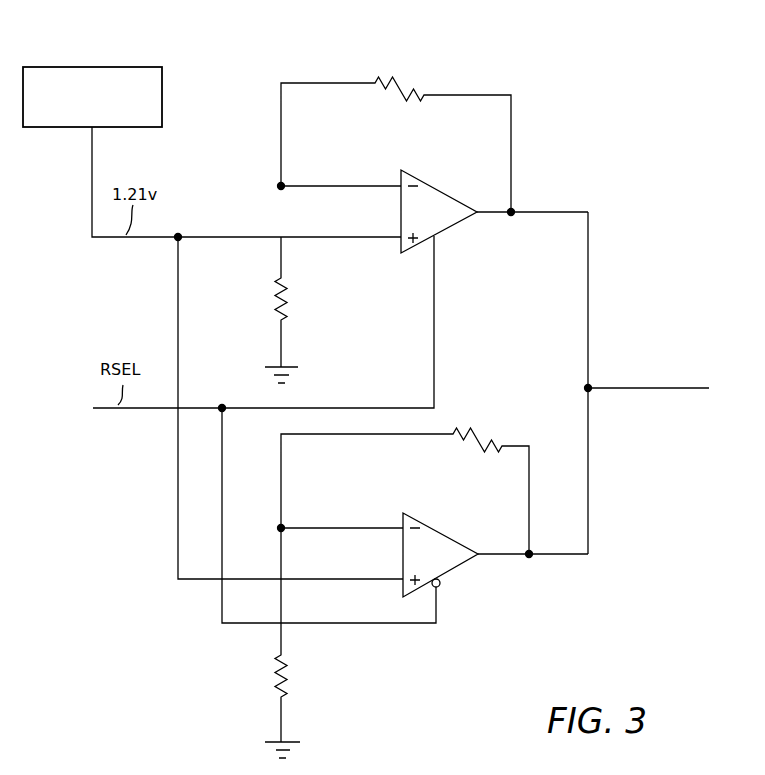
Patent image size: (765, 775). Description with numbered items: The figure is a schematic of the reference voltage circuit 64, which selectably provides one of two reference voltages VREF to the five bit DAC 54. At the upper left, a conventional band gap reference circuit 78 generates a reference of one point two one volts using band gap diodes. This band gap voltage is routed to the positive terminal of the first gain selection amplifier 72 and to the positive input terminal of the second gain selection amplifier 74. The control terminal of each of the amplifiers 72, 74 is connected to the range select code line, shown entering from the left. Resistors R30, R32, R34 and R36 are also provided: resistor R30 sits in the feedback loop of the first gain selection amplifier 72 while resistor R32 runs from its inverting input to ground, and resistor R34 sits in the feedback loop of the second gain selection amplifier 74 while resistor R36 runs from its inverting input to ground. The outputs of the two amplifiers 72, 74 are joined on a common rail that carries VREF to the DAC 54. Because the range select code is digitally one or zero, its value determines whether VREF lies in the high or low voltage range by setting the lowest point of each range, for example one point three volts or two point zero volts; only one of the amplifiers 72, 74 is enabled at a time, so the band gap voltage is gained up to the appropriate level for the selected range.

The reference voltage circuit 64 is at (594, 103).
The band gap reference circuit 78 is at (51, 127).
The first gain selection amplifier 72 is at (433, 185).
The second gain selection amplifier 74 is at (433, 528).
The five bit DAC 54 is at (674, 387).
The resistor R30 is at (396, 78).
The resistor R32 is at (275, 283).
The resistor R34 is at (472, 432).
The resistor R36 is at (275, 660).